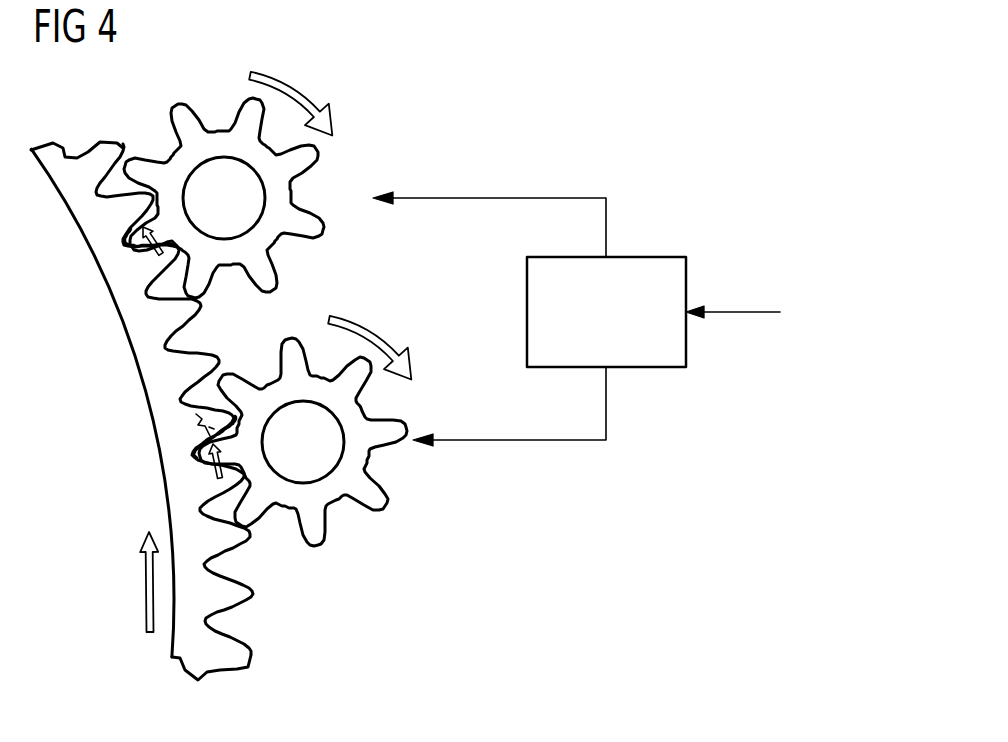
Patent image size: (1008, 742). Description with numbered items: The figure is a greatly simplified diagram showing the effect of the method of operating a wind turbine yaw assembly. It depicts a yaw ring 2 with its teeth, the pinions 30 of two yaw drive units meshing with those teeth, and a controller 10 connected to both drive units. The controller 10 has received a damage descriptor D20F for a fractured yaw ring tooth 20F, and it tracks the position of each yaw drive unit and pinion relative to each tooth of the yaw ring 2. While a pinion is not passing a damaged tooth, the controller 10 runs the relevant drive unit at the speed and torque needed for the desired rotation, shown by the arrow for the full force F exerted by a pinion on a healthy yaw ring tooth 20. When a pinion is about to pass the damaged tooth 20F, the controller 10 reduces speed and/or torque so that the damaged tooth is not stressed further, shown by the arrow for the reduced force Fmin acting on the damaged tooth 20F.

The yaw ring 2 is at (130, 327).
The healthy yaw ring tooth 20 is at (97, 157).
The pinion 30 is at (317, 190).
The controller 10 is at (647, 257).
The fractured yaw ring tooth 20F is at (213, 417).
The full force F is at (138, 233).
The reduced force Fmin is at (194, 460).
The damage descriptor D20F is at (753, 311).